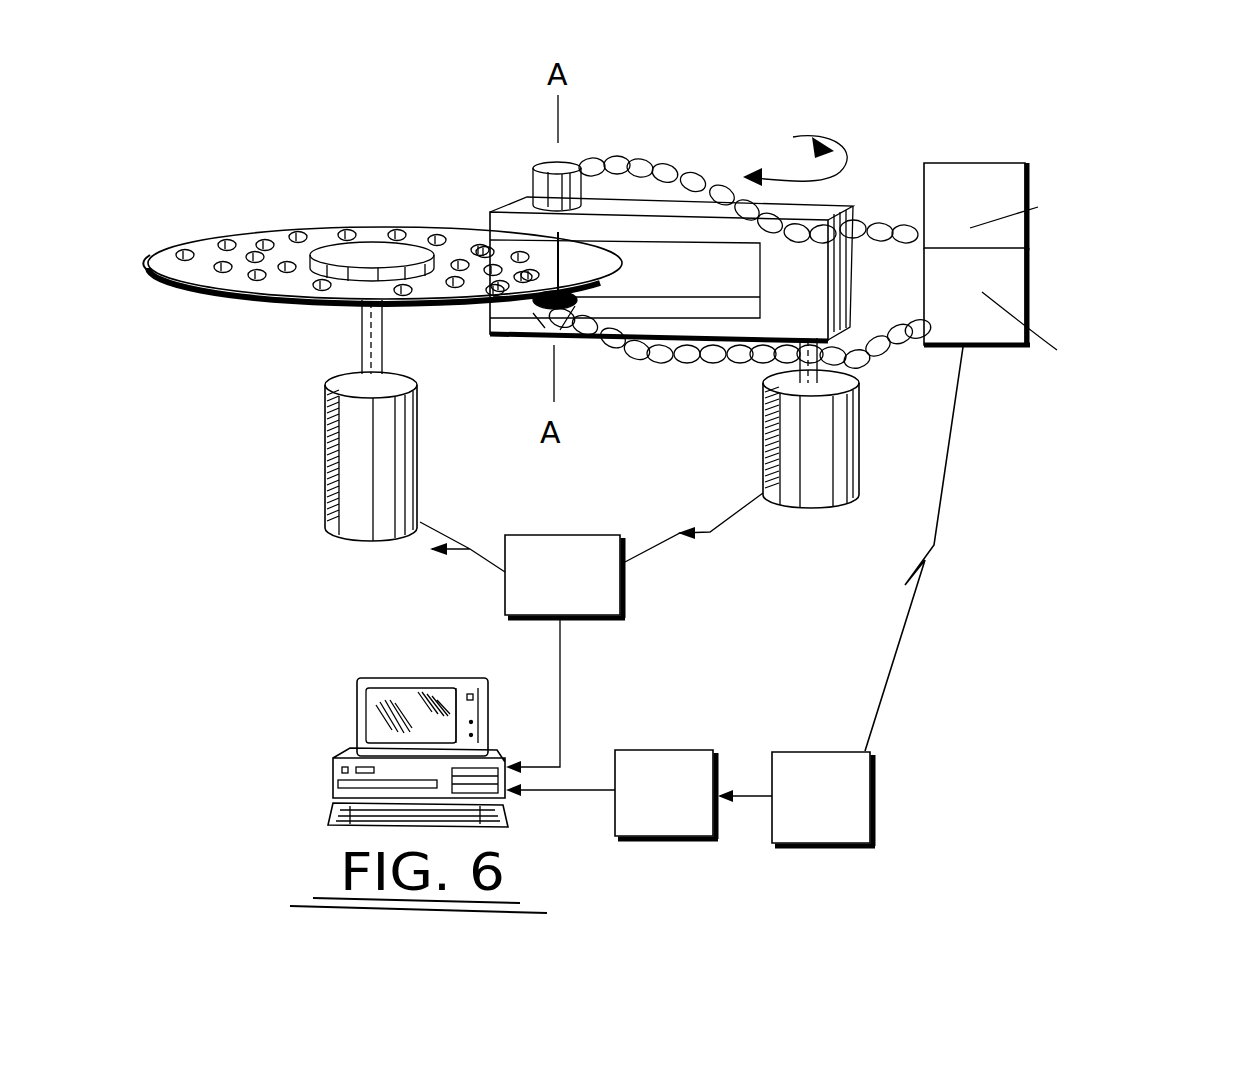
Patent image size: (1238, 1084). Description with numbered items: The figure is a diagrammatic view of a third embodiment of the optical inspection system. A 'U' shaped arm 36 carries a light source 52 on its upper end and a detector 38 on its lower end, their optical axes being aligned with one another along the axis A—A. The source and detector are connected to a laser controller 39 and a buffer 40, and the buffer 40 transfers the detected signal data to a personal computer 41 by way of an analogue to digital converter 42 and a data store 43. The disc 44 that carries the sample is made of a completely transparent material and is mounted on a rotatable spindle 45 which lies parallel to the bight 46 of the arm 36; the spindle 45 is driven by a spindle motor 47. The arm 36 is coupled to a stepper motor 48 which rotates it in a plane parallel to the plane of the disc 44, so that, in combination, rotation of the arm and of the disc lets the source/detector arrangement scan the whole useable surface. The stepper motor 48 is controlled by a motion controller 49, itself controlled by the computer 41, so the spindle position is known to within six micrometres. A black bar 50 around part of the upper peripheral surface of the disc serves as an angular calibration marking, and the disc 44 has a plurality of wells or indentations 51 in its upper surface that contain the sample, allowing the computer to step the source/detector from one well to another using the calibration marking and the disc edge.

The 'U' shaped arm 36 is at (827, 207).
The detector 38 is at (525, 332).
The laser controller 39 is at (992, 193).
The buffer 40 is at (1002, 287).
The personal computer 41 is at (372, 728).
The analogue to digital converter 42 is at (850, 820).
The data store 43 is at (637, 768).
The disc 44 is at (150, 273).
The rotatable spindle 45 is at (362, 330).
The bight 46 is at (785, 270).
The spindle motor 47 is at (332, 443).
The stepper motor 48 is at (813, 452).
The motion controller 49 is at (602, 607).
The black bar 50 is at (163, 243).
The wells or indentations 51 is at (302, 232).
The light source 52 is at (533, 167).